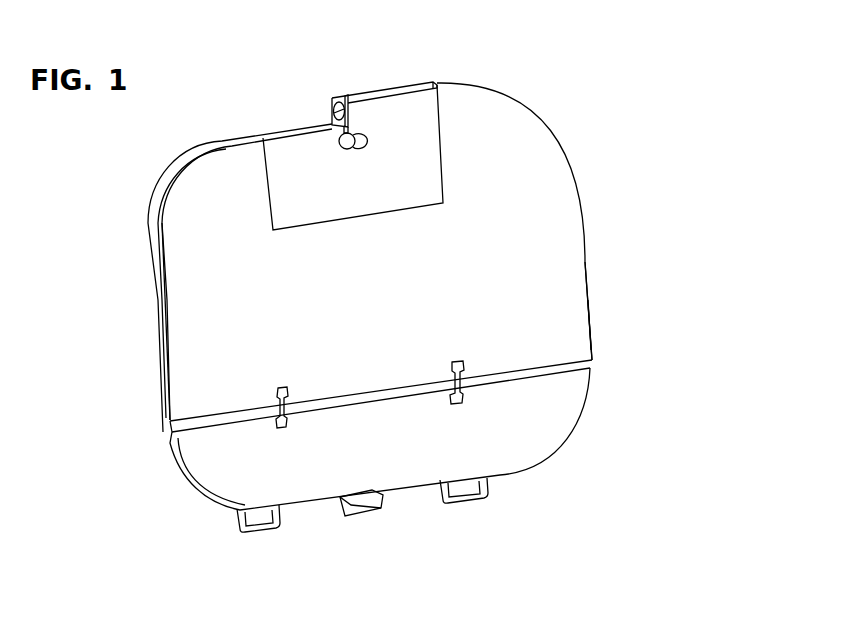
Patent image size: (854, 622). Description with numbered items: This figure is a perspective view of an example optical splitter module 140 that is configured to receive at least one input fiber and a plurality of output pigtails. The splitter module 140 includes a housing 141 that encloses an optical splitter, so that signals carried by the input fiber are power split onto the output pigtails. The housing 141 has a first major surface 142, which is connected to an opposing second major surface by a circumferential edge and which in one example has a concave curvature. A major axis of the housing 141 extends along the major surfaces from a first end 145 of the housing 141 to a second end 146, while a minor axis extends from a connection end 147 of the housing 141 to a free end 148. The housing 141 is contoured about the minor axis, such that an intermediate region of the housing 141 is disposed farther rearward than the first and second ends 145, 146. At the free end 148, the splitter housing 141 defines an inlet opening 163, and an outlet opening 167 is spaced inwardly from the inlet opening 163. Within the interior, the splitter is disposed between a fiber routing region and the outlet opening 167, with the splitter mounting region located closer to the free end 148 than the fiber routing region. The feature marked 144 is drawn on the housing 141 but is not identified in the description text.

The splitter module 140 is at (585, 163).
The housing 141 is at (589, 289).
The first major surface 142 is at (390, 333).
The flange 144 is at (153, 227).
The first end 145 is at (155, 388).
The second end 146 is at (598, 311).
The connection end 147 is at (393, 496).
The free end 148 is at (363, 88).
The inlet opening 163 is at (333, 106).
The outlet opening 167 is at (358, 146).